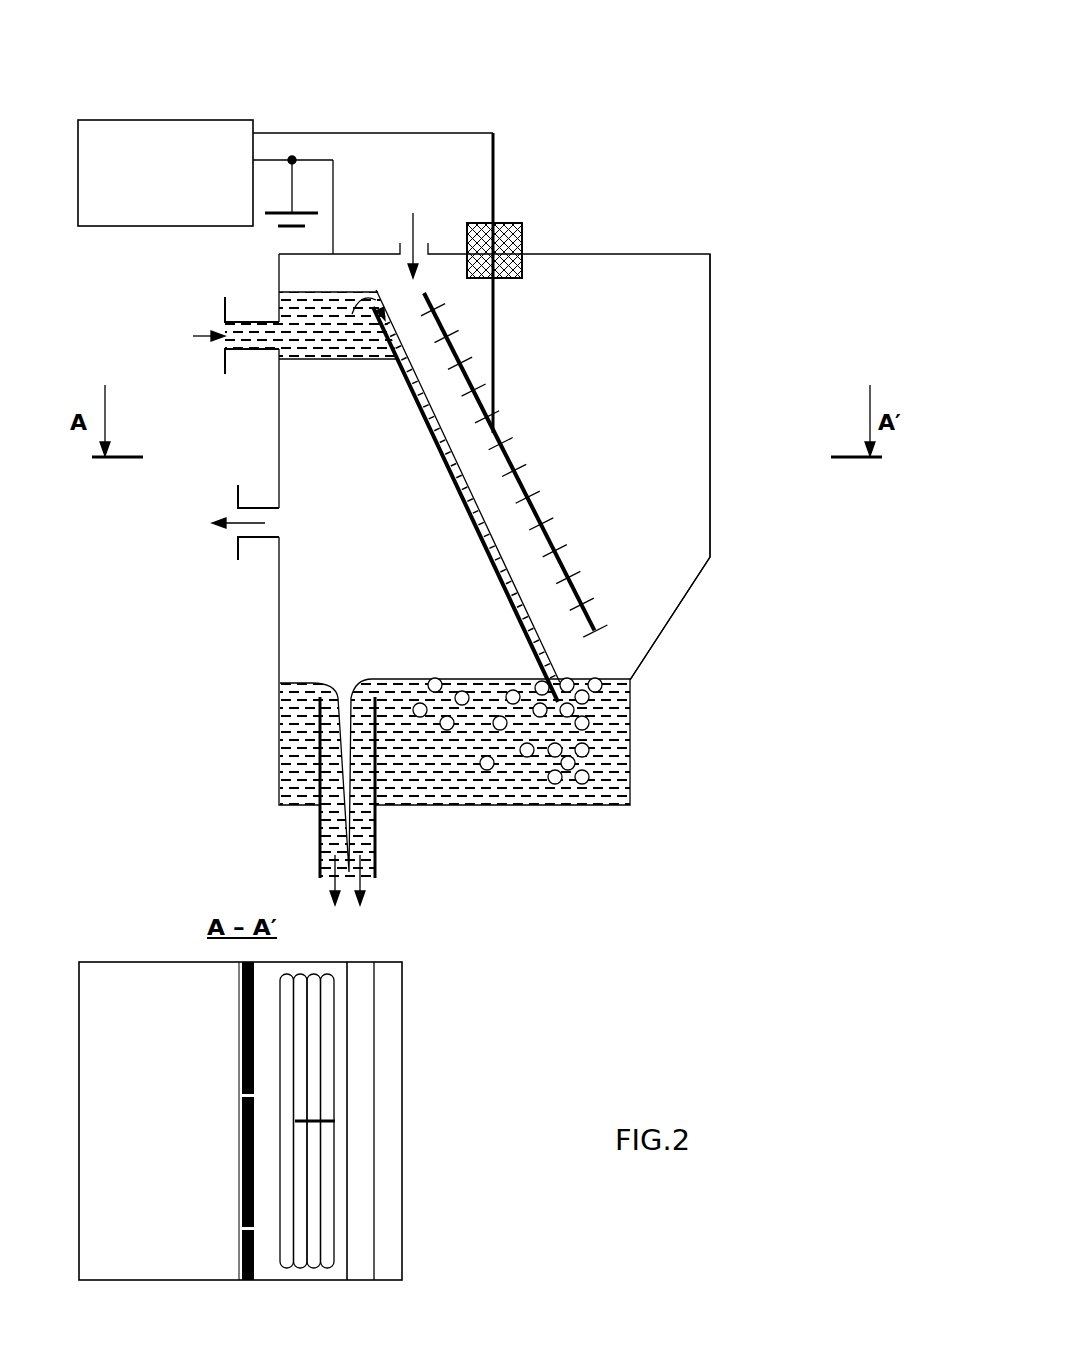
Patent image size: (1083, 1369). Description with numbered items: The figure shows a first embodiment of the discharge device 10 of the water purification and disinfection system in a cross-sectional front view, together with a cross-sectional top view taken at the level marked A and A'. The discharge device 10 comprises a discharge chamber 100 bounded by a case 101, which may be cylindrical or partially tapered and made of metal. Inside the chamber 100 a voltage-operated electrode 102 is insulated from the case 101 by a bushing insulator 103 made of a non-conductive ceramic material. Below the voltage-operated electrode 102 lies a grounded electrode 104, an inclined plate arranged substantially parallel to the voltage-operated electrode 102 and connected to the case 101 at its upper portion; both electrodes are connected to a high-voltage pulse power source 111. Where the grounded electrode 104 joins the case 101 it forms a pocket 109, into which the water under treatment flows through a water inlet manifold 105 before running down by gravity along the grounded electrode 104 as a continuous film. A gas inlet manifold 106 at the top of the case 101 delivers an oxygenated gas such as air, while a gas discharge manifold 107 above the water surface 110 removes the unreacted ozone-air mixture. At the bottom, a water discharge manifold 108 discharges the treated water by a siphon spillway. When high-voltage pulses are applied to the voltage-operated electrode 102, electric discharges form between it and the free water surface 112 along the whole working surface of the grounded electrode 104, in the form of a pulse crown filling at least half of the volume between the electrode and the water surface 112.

The discharge device 10 is at (630, 79).
The discharge chamber 100 is at (662, 477).
The case 101 is at (710, 302).
The voltage-operated electrode 102 is at (512, 465).
The bushing insulator 103 is at (512, 226).
The grounded electrode 104 is at (458, 494).
The water inlet manifold 105 is at (224, 376).
The gas inlet manifold 106 is at (381, 252).
The gas discharge manifold 107 is at (240, 558).
The water discharge manifold 108 is at (320, 828).
The pocket 109 is at (334, 337).
The water surface 110 is at (291, 681).
The high-voltage pulse power source 111 is at (105, 132).
The water surface 112 is at (517, 580).